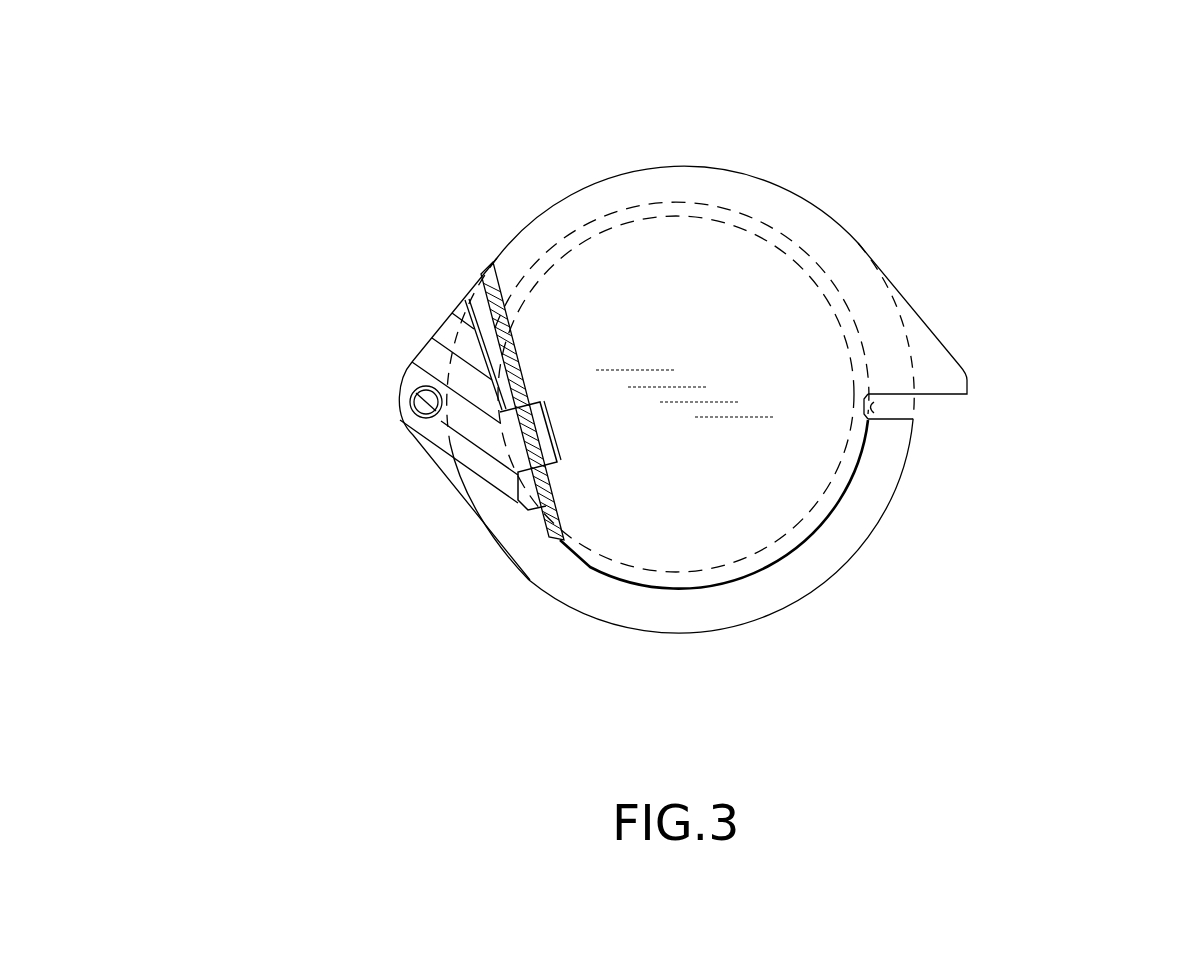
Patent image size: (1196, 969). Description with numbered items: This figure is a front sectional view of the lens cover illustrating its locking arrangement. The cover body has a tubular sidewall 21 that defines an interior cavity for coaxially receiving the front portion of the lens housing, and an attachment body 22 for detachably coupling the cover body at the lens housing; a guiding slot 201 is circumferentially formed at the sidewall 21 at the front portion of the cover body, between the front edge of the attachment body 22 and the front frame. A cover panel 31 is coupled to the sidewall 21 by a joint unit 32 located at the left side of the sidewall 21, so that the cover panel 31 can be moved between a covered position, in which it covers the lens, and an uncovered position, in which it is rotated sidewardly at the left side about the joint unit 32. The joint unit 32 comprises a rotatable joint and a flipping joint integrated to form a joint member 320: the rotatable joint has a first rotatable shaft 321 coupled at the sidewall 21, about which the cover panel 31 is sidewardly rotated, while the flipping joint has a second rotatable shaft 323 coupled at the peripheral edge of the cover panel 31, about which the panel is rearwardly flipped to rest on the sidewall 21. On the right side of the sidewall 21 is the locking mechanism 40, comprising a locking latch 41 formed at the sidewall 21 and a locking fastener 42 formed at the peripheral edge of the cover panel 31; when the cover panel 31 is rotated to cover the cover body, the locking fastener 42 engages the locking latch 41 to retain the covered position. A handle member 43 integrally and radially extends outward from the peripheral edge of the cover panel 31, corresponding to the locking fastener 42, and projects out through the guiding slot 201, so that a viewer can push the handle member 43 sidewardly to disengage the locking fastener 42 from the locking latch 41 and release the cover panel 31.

The guiding slot 201 is at (732, 160).
The tubular sidewall 21 is at (578, 182).
The attachment body 22 is at (790, 572).
The cover panel 31 is at (742, 302).
The joint unit 32 is at (372, 329).
The joint member 320 is at (425, 348).
The first rotatable shaft 321 is at (412, 400).
The second rotatable shaft 323 is at (488, 285).
The locking mechanism 40 is at (1015, 299).
The locking latch 41 is at (903, 470).
The locking fastener 42 is at (870, 390).
The handle member 43 is at (938, 375).